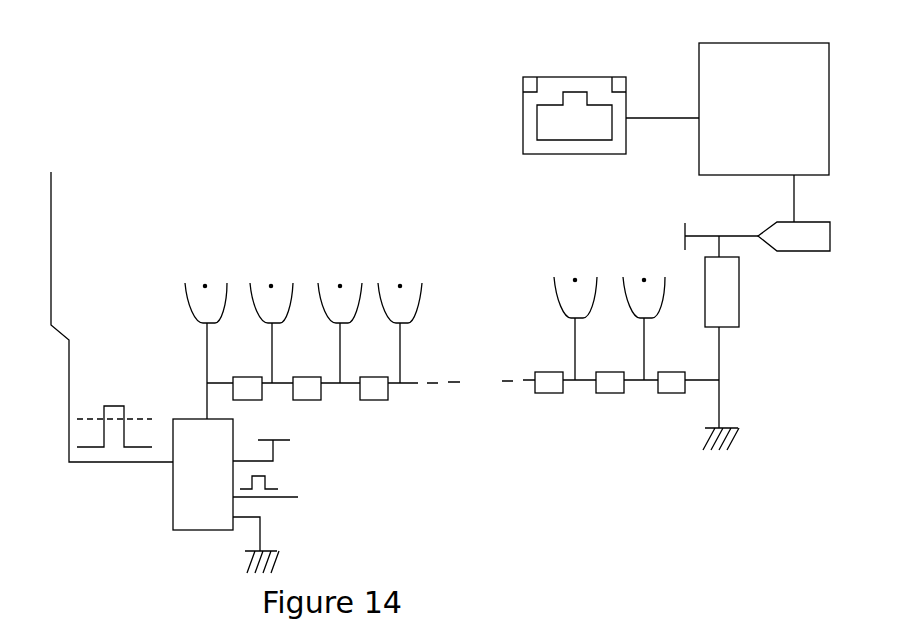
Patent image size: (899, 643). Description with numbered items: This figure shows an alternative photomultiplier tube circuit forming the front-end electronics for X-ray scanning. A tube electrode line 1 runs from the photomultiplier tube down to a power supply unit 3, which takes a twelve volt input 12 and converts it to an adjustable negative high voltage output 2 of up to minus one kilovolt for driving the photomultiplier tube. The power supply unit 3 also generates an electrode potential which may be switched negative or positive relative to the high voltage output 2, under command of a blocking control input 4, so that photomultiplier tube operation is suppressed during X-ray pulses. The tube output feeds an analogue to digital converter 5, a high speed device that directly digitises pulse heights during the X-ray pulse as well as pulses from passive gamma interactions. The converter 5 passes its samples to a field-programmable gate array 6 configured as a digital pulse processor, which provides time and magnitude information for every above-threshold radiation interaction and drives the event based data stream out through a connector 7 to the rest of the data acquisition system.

The cathode 1 is at (65, 160).
The high voltage pulse input 2 is at (88, 421).
The power supply unit (PSU) 3 is at (202, 466).
The 12V supply 12 is at (263, 442).
The inhibit input 4 is at (293, 489).
The analogue to digital converter (ADC) 5 is at (794, 213).
The FPGA digital pulse processor 6 is at (764, 109).
The network connector 7 is at (611, 115).